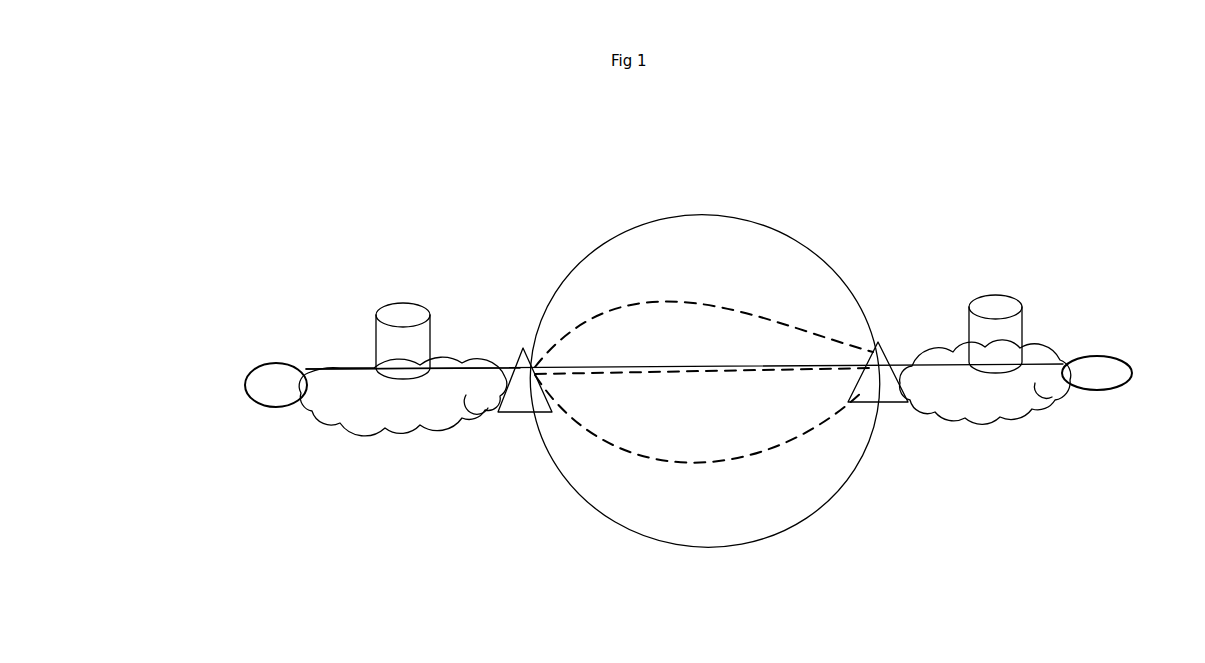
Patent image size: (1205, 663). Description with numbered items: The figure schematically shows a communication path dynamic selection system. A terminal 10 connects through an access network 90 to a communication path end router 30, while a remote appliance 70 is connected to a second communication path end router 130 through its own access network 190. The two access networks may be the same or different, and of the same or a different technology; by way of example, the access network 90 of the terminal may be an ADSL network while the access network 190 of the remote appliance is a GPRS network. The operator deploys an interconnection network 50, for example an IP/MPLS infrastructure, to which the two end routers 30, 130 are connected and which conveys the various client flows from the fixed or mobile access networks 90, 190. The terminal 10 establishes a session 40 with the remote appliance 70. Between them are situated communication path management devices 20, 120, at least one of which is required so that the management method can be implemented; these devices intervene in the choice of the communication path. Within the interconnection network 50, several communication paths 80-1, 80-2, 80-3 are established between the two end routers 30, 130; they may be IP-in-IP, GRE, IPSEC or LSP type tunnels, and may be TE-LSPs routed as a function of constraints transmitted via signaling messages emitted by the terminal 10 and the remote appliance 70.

The terminal 10 is at (255, 369).
The communication path management device 20 is at (377, 313).
The communication path end router 30 is at (537, 428).
The session 40 is at (338, 362).
The interconnection network 50 is at (745, 222).
The remote appliance 70 is at (1130, 368).
The communication path 80-1 is at (652, 297).
The communication path 80-2 is at (705, 467).
The communication path 80-3 is at (694, 374).
The access network 90 is at (400, 427).
The communication path management device 120 is at (1020, 313).
The communication path end router 130 is at (873, 428).
The access network 190 is at (990, 418).